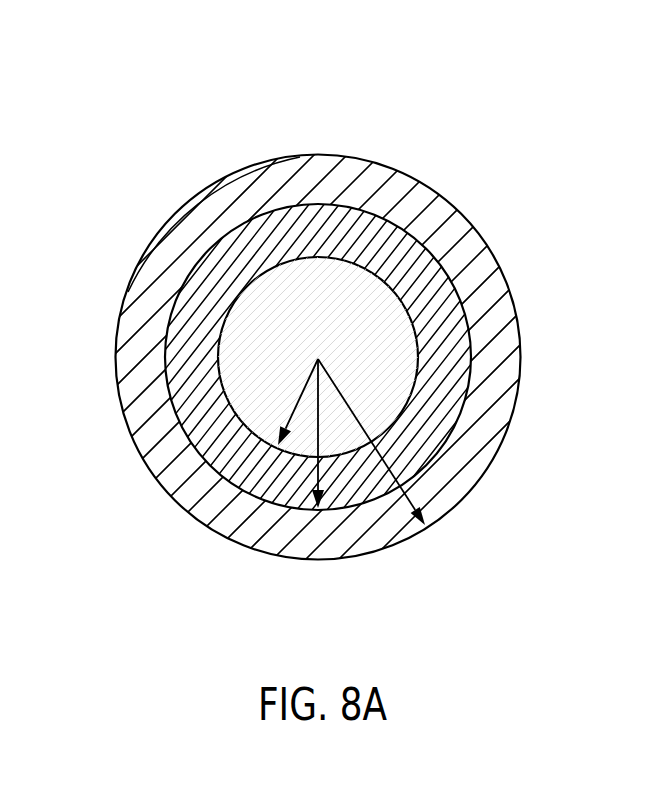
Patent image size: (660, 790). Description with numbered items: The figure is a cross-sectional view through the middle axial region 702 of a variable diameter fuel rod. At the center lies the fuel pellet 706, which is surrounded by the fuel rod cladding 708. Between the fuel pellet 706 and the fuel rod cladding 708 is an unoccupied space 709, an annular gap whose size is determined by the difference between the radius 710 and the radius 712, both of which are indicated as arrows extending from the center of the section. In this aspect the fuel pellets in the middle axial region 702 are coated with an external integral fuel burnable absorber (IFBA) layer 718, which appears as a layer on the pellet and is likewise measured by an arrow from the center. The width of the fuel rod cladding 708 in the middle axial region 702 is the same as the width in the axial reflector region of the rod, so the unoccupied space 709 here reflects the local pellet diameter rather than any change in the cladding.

The middle axial region 702 is at (247, 146).
The fuel pellet 706 is at (247, 333).
The fuel rod cladding 708 is at (507, 365).
The unoccupied space 709 is at (456, 234).
The radius 710 is at (304, 388).
The radius 712 is at (318, 468).
The external integral fuel burnable absorber (IFBA) layer 718 is at (423, 414).